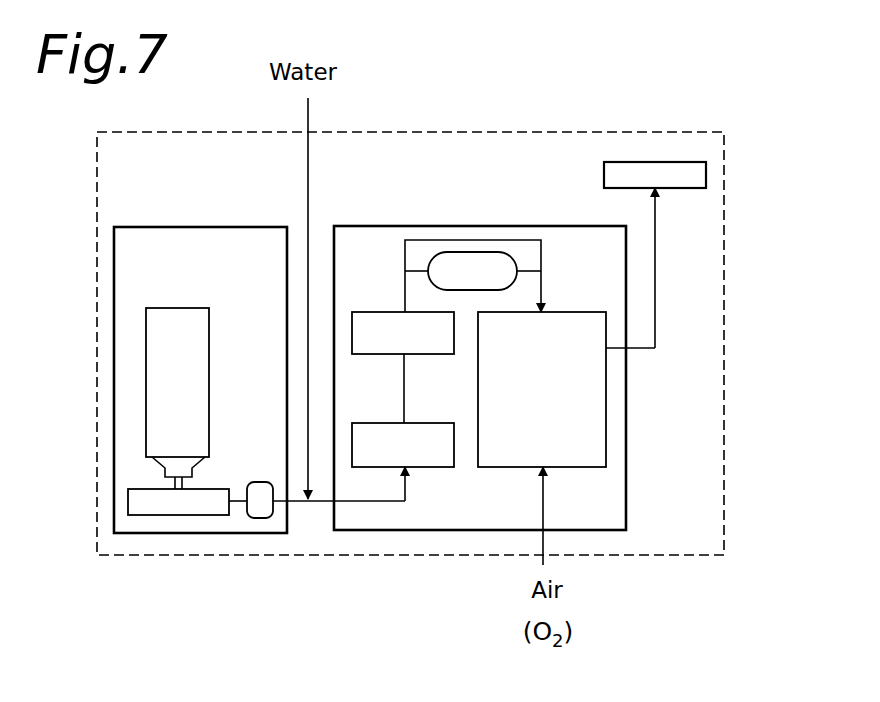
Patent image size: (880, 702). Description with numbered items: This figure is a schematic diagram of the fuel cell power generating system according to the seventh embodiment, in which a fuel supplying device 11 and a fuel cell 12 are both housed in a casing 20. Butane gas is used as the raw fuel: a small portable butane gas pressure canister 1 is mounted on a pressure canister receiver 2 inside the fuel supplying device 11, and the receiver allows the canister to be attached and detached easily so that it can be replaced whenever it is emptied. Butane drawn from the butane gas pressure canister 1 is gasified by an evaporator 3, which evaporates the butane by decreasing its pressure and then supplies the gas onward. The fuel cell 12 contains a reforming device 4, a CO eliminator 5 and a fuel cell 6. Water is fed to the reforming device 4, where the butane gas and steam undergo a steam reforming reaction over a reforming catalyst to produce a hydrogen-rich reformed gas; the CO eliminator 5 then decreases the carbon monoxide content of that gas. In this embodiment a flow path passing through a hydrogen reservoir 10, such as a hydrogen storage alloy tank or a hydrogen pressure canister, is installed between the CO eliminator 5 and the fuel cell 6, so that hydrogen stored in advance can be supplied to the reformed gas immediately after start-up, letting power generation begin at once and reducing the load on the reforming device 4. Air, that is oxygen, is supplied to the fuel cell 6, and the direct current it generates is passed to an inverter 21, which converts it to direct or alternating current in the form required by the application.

The butane gas pressure canister 1 is at (190, 372).
The pressure canister receiver 2 is at (172, 515).
The evaporator 3 is at (262, 482).
The reforming device 4 is at (438, 423).
The CO eliminator 5 is at (380, 312).
The fuel cell 6 is at (606, 430).
The hydrogen reservoir 10 is at (460, 252).
The fuel supplying device 11 is at (183, 227).
The fuel cell 12 is at (372, 226).
The casing 20 is at (724, 289).
The inverter 21 is at (604, 170).